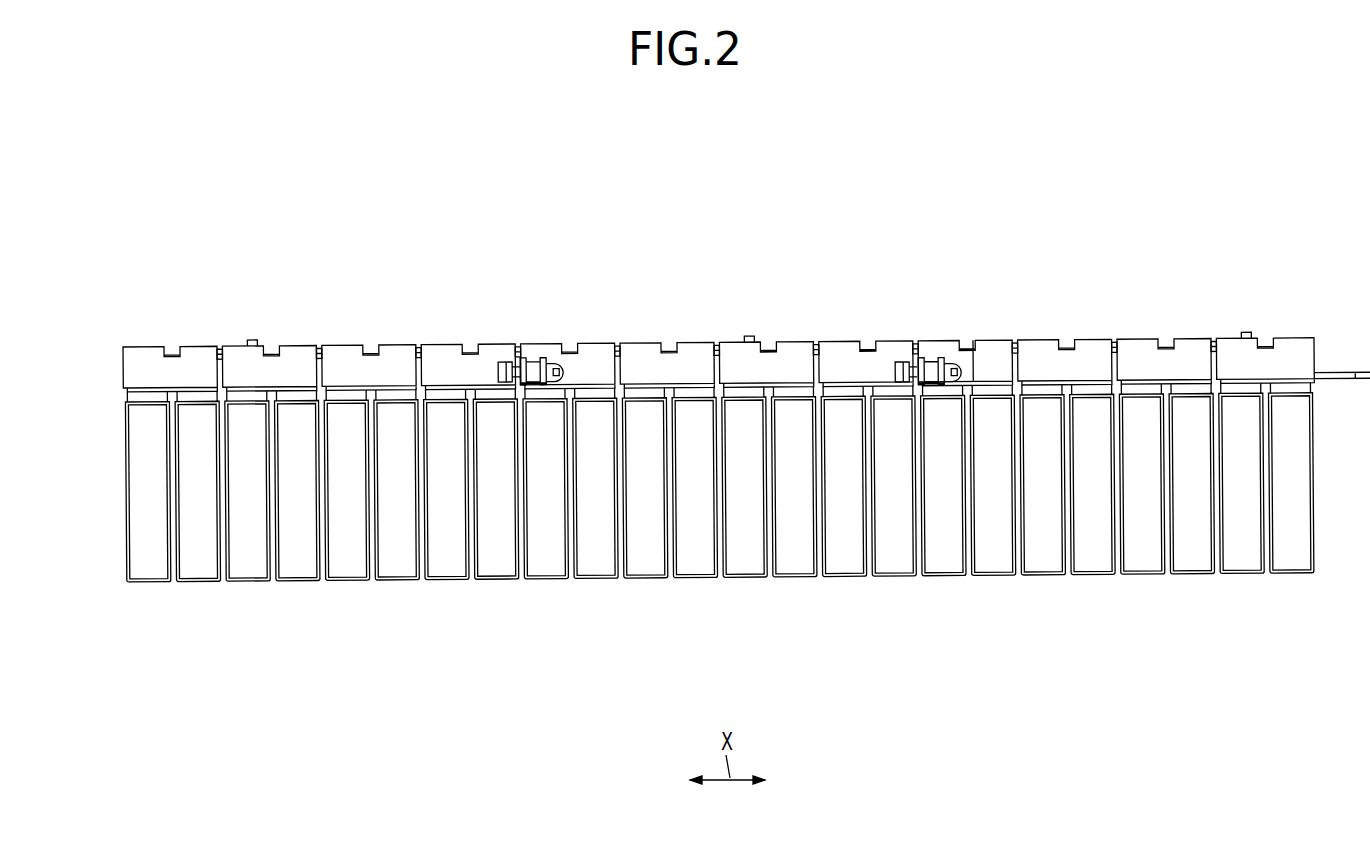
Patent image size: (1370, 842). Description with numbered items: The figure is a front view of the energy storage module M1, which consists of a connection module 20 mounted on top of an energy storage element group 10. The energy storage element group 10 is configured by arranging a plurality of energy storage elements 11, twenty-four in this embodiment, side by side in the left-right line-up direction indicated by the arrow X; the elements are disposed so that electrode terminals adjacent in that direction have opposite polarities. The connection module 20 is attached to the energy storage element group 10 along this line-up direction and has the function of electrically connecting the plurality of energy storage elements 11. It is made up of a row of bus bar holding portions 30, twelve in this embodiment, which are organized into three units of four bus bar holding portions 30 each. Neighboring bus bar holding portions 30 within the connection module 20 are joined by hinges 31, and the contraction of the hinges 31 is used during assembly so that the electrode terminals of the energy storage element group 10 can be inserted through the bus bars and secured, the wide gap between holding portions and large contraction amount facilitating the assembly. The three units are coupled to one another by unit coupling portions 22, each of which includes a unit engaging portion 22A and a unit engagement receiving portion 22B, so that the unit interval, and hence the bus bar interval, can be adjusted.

The energy storage module M1 is at (745, 223).
The energy storage element group 10 is at (722, 544).
The energy storage element 11 is at (148, 563).
The connection module 20 is at (1302, 308).
The unit coupling portion 22 is at (522, 312).
The unit engaging portion 22A is at (505, 362).
The unit engagement receiving portion 22B is at (546, 333).
The bus bar holding portion 30 is at (141, 344).
The hinge 31 is at (320, 350).